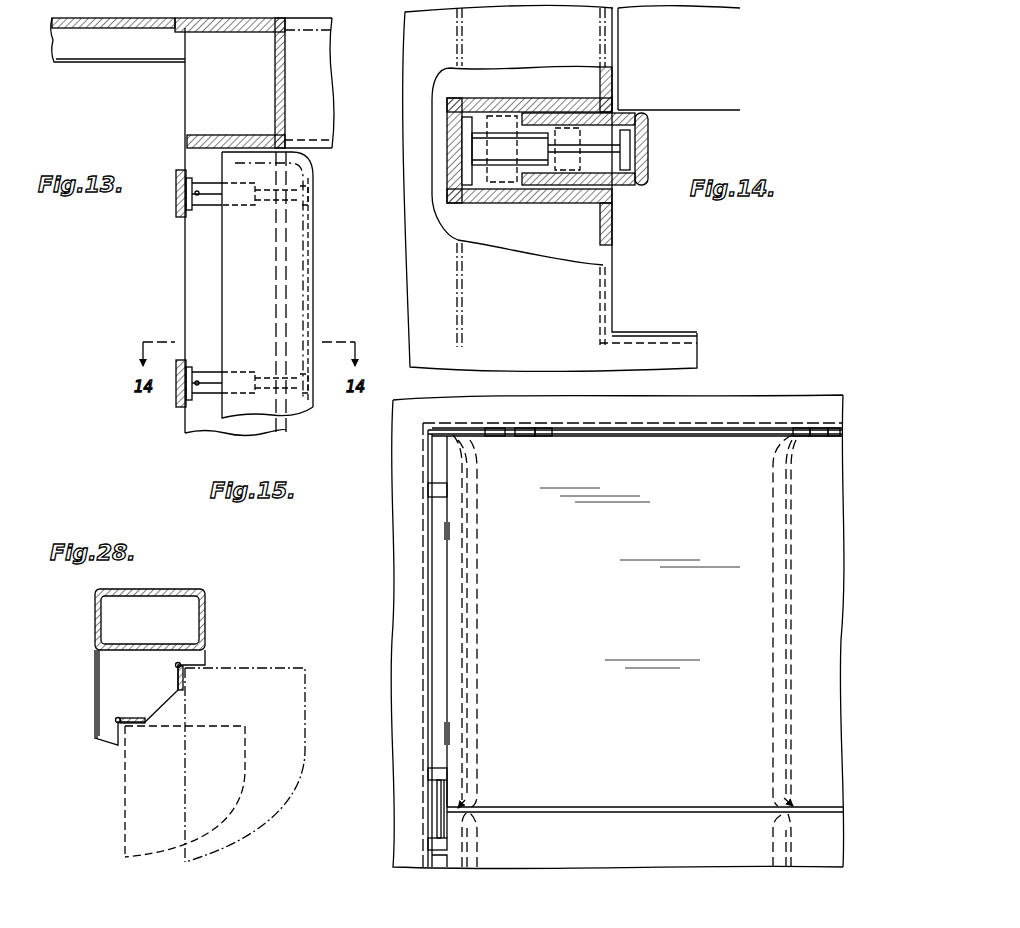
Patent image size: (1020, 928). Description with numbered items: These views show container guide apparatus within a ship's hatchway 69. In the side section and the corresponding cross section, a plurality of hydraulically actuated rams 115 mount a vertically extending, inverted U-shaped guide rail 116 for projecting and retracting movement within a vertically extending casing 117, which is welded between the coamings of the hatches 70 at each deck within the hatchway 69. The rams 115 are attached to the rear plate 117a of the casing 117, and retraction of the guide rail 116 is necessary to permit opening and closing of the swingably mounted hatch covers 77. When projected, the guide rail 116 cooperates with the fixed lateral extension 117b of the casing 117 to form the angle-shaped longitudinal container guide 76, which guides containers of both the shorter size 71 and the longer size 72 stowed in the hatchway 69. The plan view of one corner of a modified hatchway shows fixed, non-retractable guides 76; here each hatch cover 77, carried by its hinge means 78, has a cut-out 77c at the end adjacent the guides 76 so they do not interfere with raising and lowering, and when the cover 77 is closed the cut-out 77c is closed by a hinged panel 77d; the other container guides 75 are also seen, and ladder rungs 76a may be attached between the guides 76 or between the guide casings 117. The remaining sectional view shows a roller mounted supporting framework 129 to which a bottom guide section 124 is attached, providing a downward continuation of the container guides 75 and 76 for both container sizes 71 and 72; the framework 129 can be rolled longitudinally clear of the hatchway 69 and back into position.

In FIG. 13, the hatch 70 is at (284, 82).
In FIG. 14, the hatch 70 is at (618, 300).
In FIG. 15, the hatch 70 is at (428, 528).
In FIG. 13, the hatchway 69 is at (352, 154).
In FIG. 14, the hatchway 69 is at (650, 257).
In FIG. 14, the longer container 72 is at (684, 61).
In FIG. 28, the longer container 72 is at (256, 701).
In FIG. 28, the container 71 is at (162, 787).
In FIG. 15, the container guide 75 is at (460, 604).
In FIG. 13, the longitudinal container guide 76 is at (315, 228).
In FIG. 14, the longitudinal container guide 76 is at (650, 153).
In FIG. 15, the longitudinal container guide 76 is at (430, 490).
In FIG. 15, the ladder rung 76a is at (437, 812).
In FIG. 15, the hatch cover 77 is at (618, 614).
In FIG. 15, the cut-out 77c is at (447, 796).
In FIG. 15, the hinged panel 77d is at (437, 572).
In FIG. 15, the hinge means 78 is at (530, 428).
In FIG. 13, the hydraulically actuated ram 115 is at (208, 206).
In FIG. 14, the hydraulically actuated ram 115 is at (497, 138).
In FIG. 13, the guide rail 116 is at (302, 289).
In FIG. 14, the guide rail 116 is at (619, 190).
In FIG. 13, the casing 117 is at (198, 275).
In FIG. 14, the casing 117 is at (490, 203).
In FIG. 13, the rear plate 117a is at (176, 206).
In FIG. 14, the rear plate 117a is at (462, 172).
In FIG. 14, the fixed lateral extension 117b is at (612, 88).
In FIG. 28, the bottom guide section 124 is at (135, 717).
In FIG. 28, the roller mounted supporting framework 129 is at (128, 590).